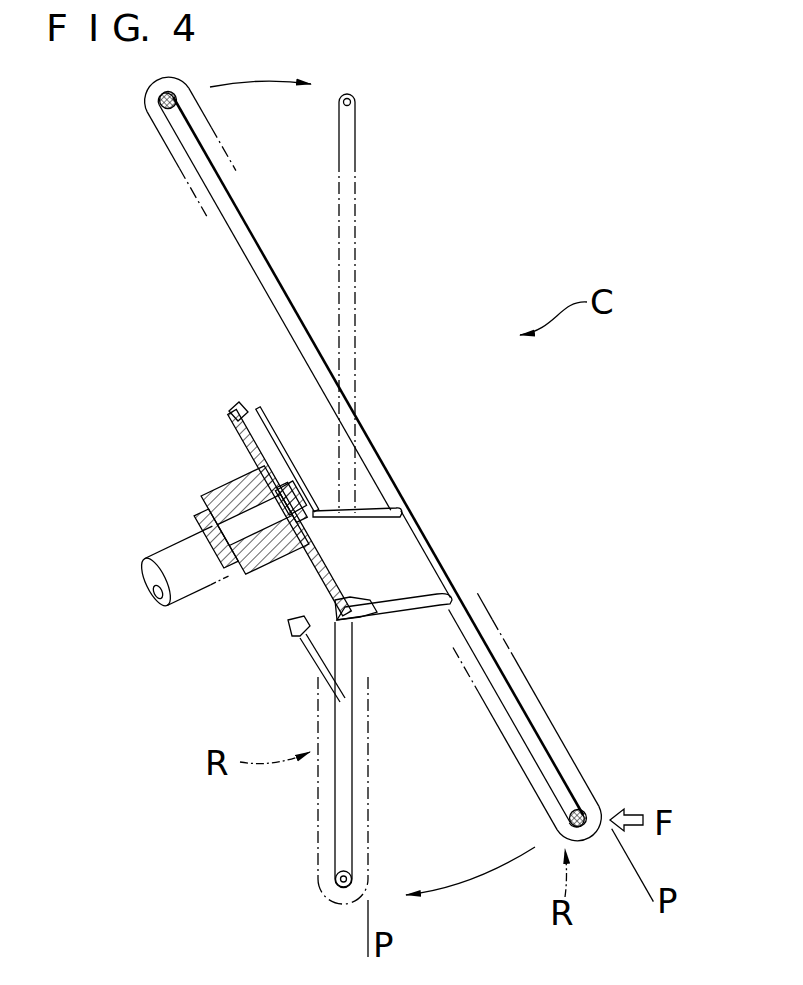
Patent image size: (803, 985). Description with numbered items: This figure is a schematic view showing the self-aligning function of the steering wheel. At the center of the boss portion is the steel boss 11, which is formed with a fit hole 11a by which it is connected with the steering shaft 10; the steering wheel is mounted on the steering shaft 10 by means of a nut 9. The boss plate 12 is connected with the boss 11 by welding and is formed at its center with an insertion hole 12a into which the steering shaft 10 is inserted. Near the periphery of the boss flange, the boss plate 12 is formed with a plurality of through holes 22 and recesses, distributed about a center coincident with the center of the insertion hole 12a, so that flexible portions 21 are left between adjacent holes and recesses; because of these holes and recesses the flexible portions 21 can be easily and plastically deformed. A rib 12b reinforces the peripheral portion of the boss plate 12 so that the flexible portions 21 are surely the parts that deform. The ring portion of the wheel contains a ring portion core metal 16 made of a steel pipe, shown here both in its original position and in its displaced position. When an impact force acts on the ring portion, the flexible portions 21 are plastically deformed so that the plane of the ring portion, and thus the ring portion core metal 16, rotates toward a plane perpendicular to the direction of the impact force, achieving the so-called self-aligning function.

The nut 9 is at (290, 482).
The steering shaft 10 is at (163, 557).
The boss 11 is at (216, 507).
The fit hole 11a is at (232, 570).
The boss plate 12 is at (232, 432).
The insertion hole 12a is at (308, 508).
The rib 12b is at (236, 409).
The ring portion core metal 16 is at (542, 756).
The flexible portions 21 is at (326, 584).
The through holes 22 is at (258, 412).